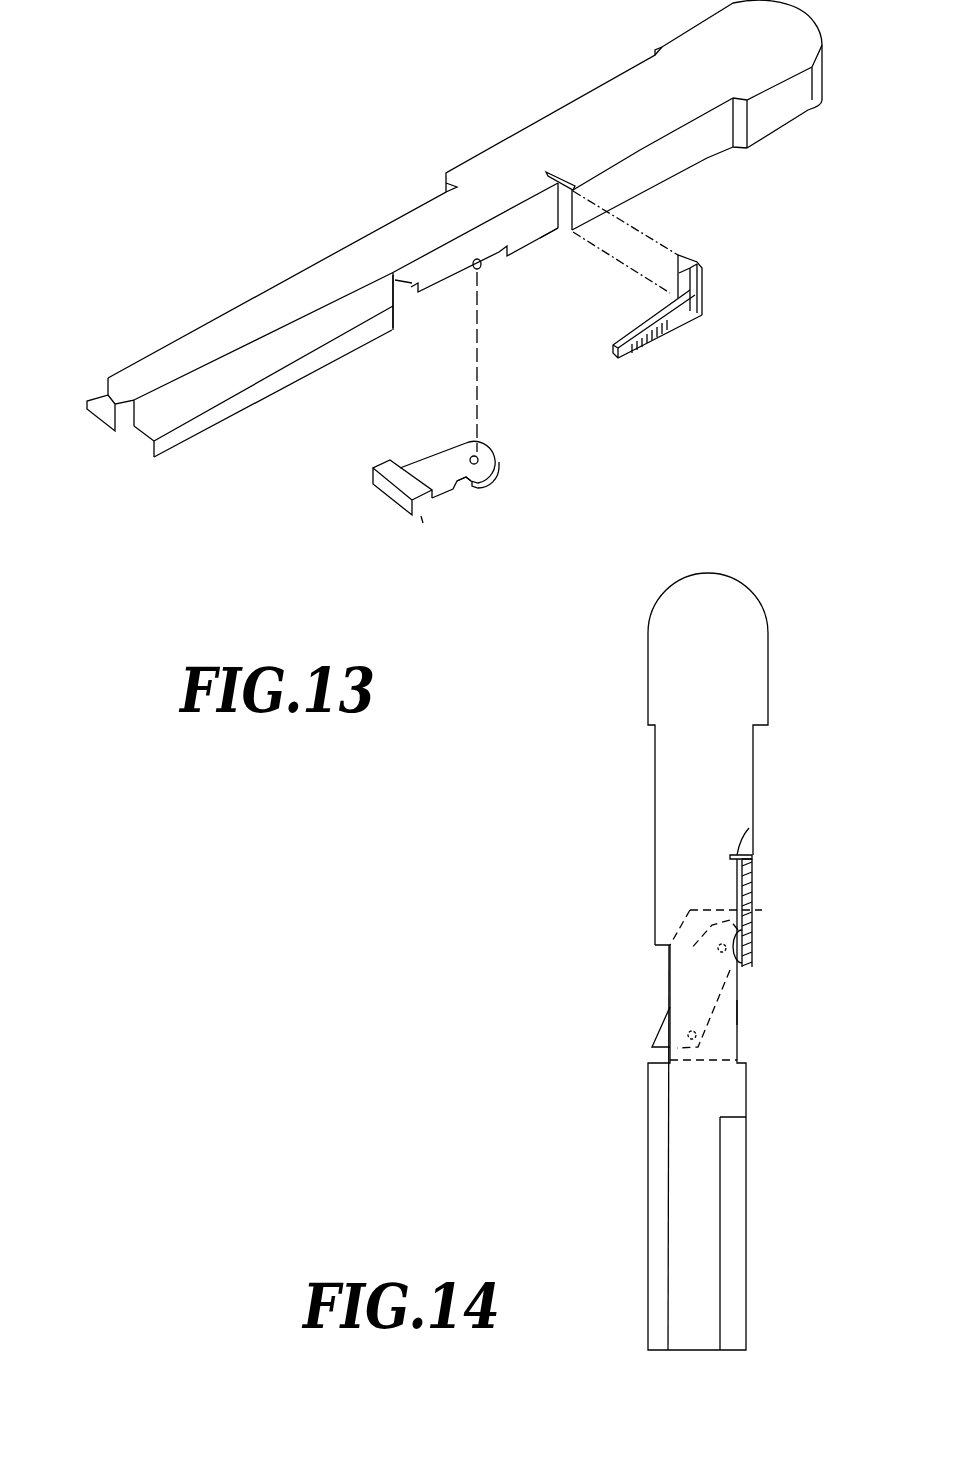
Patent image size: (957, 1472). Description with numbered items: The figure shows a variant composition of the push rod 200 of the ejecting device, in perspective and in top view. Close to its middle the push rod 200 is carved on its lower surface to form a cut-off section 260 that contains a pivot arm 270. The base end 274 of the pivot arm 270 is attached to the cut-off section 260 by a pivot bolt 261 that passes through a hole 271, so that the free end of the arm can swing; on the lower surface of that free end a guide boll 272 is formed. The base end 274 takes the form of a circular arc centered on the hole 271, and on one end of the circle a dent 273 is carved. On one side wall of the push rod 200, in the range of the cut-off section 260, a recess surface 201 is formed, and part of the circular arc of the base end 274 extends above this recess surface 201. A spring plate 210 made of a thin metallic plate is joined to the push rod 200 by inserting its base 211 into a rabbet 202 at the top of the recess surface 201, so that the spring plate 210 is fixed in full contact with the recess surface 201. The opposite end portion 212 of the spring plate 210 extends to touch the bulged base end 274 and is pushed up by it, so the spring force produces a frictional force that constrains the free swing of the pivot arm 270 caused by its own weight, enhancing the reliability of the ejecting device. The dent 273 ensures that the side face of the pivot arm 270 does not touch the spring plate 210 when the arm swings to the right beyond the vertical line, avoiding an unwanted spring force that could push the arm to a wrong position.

In FIG. 13, the push rod 200 is at (443, 93).
In FIG. 14, the push rod 200 is at (667, 777).
In FIG. 13, the recess surface 201 is at (548, 254).
In FIG. 14, the recess surface 201 is at (756, 1013).
In FIG. 13, the rabbet 202 is at (560, 173).
In FIG. 14, the rabbet 202 is at (736, 851).
In FIG. 13, the spring plate 210 is at (715, 303).
In FIG. 14, the spring plate 210 is at (782, 896).
In FIG. 13, the base of spring plate 211 is at (682, 253).
In FIG. 14, the base of spring plate 211 is at (754, 857).
In FIG. 13, the arm of spring member 212 is at (630, 350).
In FIG. 14, the arm of spring member 212 is at (746, 952).
In FIG. 13, the cut-off section 260 is at (423, 310).
In FIG. 13, the pivot bolt 261 is at (480, 265).
In FIG. 13, the pivot arm 270 is at (414, 432).
In FIG. 14, the pivot arm 270 is at (703, 976).
In FIG. 13, the hole 271 is at (498, 462).
In FIG. 13, the guide boll 272 is at (421, 522).
In FIG. 13, the dent 273 is at (472, 493).
In FIG. 13, the base end of pivot arm 274 is at (478, 455).
In FIG. 14, the base end of pivot arm 274 is at (742, 928).